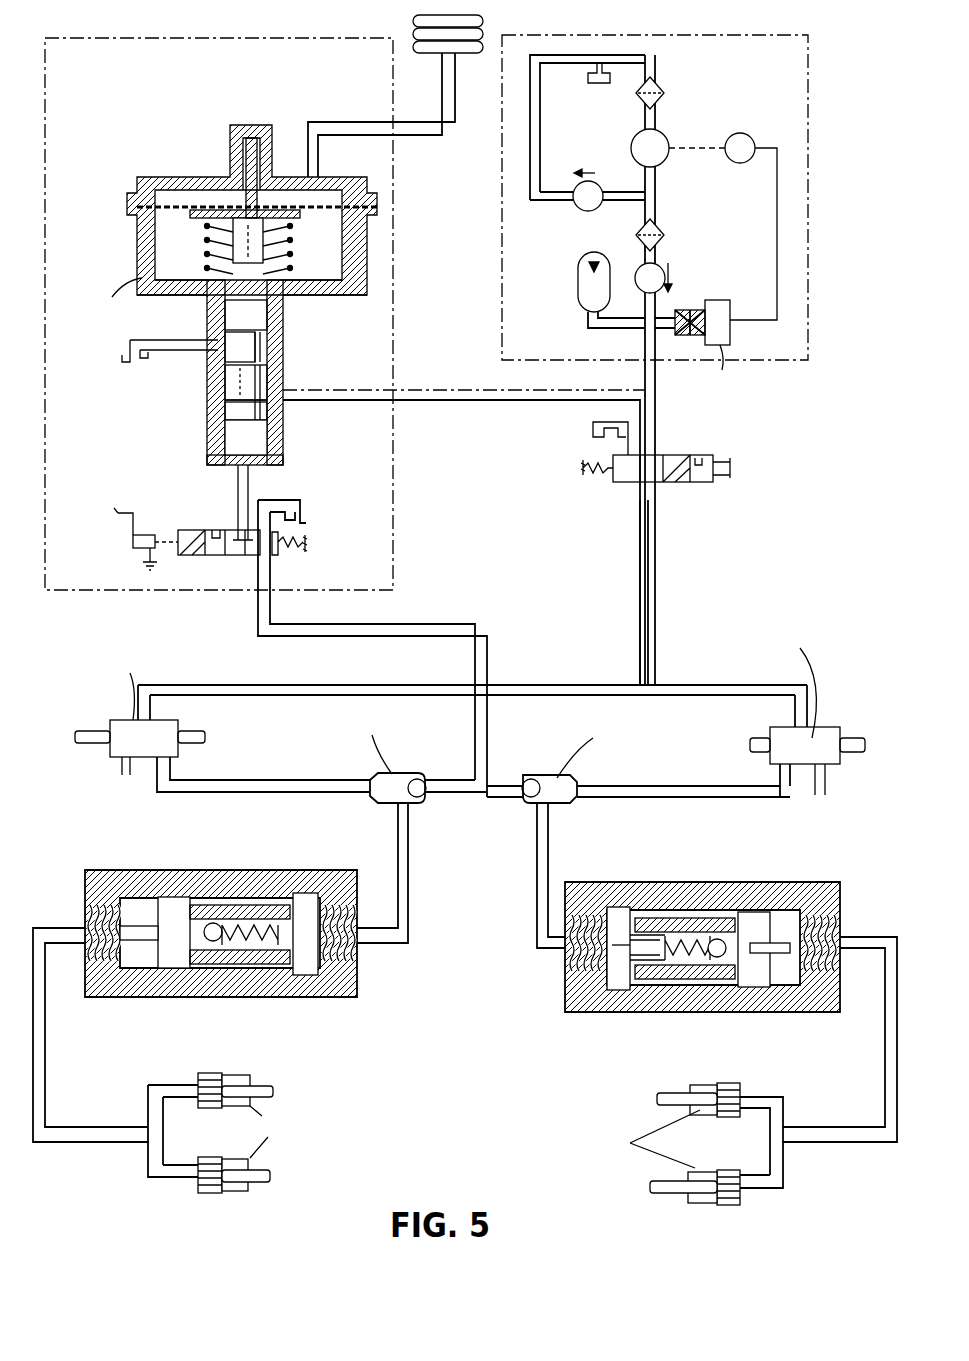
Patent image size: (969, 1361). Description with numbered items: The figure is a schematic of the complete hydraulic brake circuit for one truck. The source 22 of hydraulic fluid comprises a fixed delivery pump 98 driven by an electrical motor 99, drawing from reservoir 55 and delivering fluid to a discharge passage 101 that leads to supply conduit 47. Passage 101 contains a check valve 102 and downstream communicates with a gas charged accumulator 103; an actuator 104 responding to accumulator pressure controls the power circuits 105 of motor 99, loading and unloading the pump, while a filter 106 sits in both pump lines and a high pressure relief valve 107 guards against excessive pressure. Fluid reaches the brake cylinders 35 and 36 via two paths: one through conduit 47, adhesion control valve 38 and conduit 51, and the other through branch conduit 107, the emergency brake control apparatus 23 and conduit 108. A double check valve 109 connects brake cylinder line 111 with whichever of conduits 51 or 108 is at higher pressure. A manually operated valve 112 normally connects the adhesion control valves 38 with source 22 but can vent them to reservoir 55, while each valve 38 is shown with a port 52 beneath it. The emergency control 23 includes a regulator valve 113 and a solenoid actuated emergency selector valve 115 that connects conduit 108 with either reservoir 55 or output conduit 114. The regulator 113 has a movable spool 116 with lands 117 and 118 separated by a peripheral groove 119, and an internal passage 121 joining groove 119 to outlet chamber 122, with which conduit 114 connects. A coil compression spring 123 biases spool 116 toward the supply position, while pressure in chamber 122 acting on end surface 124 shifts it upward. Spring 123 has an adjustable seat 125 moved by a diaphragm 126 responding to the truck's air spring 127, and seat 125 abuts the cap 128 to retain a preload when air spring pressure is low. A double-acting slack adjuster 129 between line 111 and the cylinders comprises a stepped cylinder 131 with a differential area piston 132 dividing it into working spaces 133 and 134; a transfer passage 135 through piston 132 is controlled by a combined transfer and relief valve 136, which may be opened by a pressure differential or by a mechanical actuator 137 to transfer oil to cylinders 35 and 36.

The emergency brake control apparatus 23 is at (38, 171).
The source of hydraulic fluid 22 is at (812, 133).
The air spring 127 is at (413, 22).
The diaphragm 126 is at (377, 240).
The regulator valve 113 is at (130, 268).
The cap 128 is at (165, 207).
The adjustable seat 125 is at (216, 207).
The coil compression spring 123 is at (205, 247).
The end surface 124 is at (226, 447).
The movable spool 116 is at (220, 310).
The land 118 is at (230, 345).
The peripheral groove 119 is at (235, 372).
The land 117 is at (235, 398).
The internal passage 121 is at (235, 415).
The outlet chamber 122 is at (258, 446).
The output conduit 114 is at (238, 488).
The solenoid actuated emergency selector valve 115 is at (210, 530).
The conduit 108 is at (415, 625).
The branch conduit 107 is at (515, 403).
The reservoir 55 is at (137, 363).
The discharge passage 101 is at (645, 345).
The supply conduit 47 is at (650, 613).
The filter 106 is at (662, 93).
The fixed delivery pump 98 is at (668, 138).
The electrical motor 99 is at (748, 133).
The check valve 102 is at (637, 268).
The accumulator 103 is at (578, 280).
The actuator 104 is at (688, 310).
The power circuits 105 is at (715, 300).
The manually operated valve 112 is at (680, 458).
The conduit 51 is at (280, 780).
The adhesion control valve 38 is at (115, 720).
The outlet 52 is at (120, 770).
The double check valve 109 is at (418, 775).
The brake cylinder line 111 is at (410, 860).
The double-acting hydraulic slack adjuster 129 is at (266, 866).
The working space 133 is at (618, 915).
The stepped cylinder 131 is at (675, 905).
The working space 134 is at (762, 918).
The transfer passage 135 is at (632, 950).
The differential area piston 132 is at (620, 988).
The combined transfer and relief valve 136 is at (733, 988).
The mechanical actuator 137 is at (762, 990).
The brake cylinder 35 is at (222, 1073).
The brake cylinder 36 is at (222, 1157).